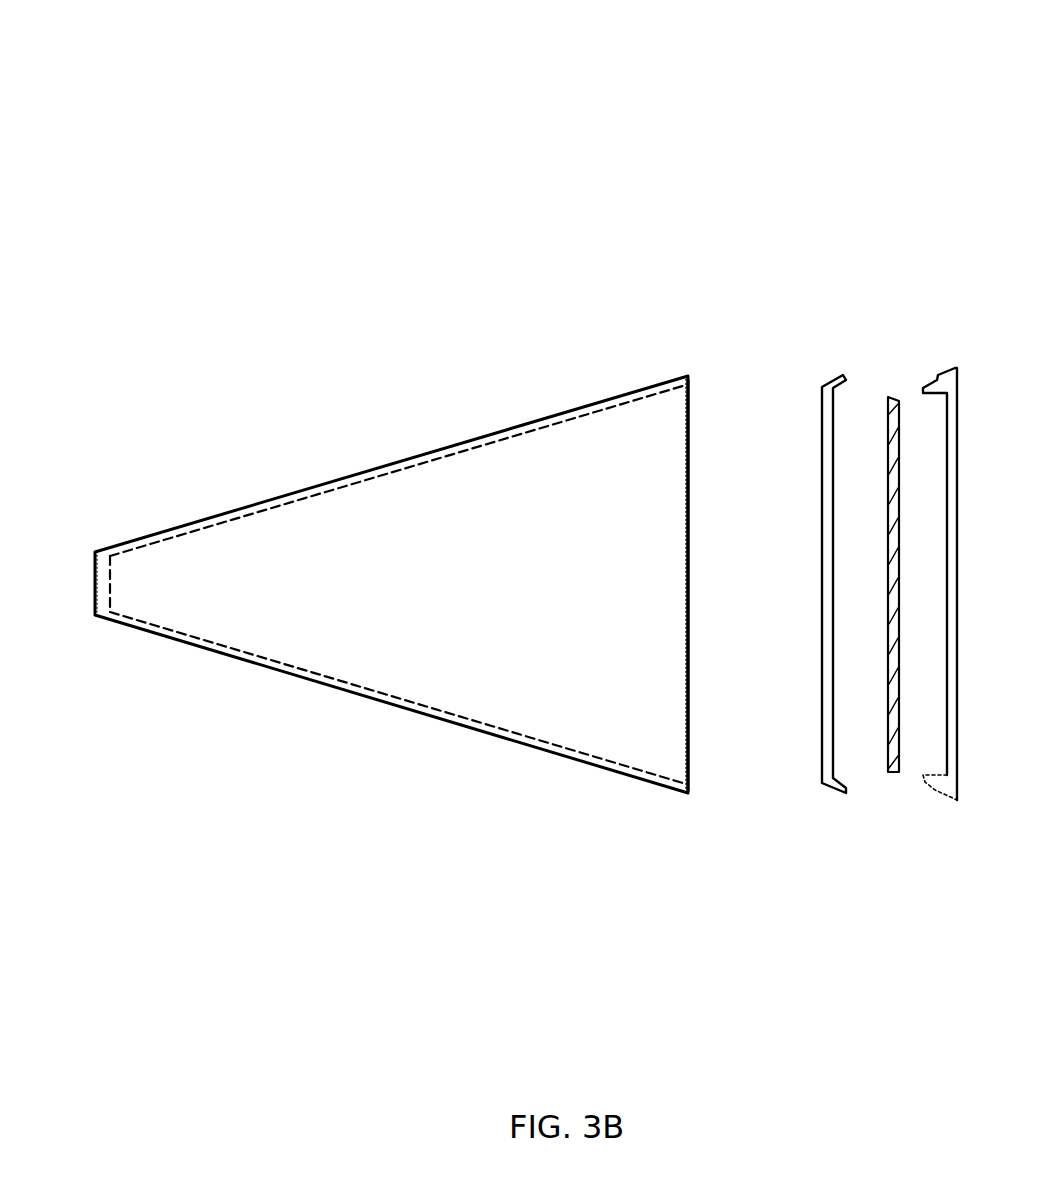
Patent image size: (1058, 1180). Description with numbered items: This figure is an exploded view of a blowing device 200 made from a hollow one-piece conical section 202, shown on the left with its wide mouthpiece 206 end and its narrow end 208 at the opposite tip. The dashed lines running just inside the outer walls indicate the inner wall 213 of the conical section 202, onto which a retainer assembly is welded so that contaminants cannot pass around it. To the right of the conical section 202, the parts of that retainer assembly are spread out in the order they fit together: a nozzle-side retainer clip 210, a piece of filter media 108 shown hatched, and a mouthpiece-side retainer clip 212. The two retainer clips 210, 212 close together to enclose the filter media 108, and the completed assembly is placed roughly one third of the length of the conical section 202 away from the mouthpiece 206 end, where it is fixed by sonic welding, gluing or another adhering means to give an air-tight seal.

The blowing device 200 is at (858, 97).
The conical section 202 is at (318, 681).
The mouthpiece 206 is at (688, 728).
The small end / throat of horn 208 is at (93, 606).
The nozzle-side retainer clip 210 is at (820, 390).
The mouthpiece-side retainer clip 212 is at (936, 364).
The inner wall 213 is at (392, 469).
The filter media 108 is at (893, 774).